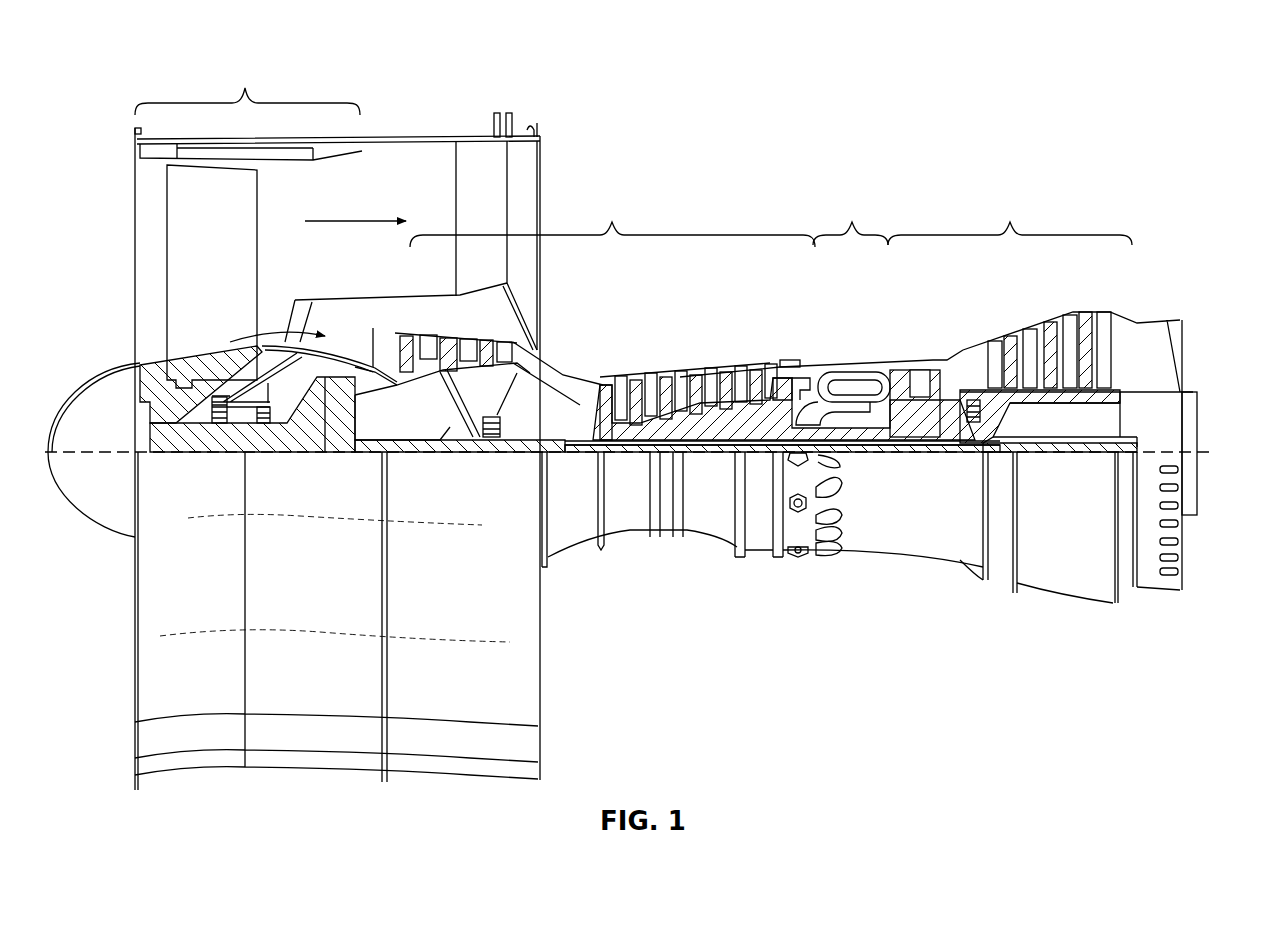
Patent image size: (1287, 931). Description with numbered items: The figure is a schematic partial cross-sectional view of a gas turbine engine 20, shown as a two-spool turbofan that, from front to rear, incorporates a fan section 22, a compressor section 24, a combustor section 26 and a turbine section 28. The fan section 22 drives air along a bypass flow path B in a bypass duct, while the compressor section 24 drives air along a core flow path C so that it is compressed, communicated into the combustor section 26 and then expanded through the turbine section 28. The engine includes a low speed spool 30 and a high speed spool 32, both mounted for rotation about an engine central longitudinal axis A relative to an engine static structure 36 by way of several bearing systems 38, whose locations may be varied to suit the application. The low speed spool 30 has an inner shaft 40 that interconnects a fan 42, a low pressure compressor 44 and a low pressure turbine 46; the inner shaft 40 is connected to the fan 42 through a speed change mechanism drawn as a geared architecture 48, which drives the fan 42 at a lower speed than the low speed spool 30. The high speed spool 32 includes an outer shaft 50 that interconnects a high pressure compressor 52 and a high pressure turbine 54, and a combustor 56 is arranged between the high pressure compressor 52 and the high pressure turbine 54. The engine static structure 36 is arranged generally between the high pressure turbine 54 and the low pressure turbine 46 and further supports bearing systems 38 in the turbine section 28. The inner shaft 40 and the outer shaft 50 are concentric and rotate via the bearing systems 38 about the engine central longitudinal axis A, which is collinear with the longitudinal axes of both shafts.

The gas turbine engine 20 is at (1086, 107).
The fan section 22 is at (336, 421).
The compressor section 24 is at (550, 325).
The combustor section 26 is at (821, 287).
The turbine section 28 is at (1042, 394).
The low speed spool 30 is at (723, 463).
The high speed spool 32 is at (773, 408).
The engine static structure 36 is at (768, 554).
The bearing systems 38 is at (230, 430).
The inner shaft 40 is at (555, 449).
The fan 42 is at (224, 253).
The low pressure compressor 44 is at (462, 333).
The low pressure turbine 46 is at (1058, 333).
The geared architecture 48 is at (338, 437).
The outer shaft 50 is at (890, 446).
The high pressure compressor 52 is at (692, 430).
The high pressure turbine 54 is at (915, 368).
The combustor 56 is at (845, 388).
The engine central longitudinal axis A is at (1205, 452).
The bypass flow path B is at (363, 221).
The core flow path C is at (242, 328).